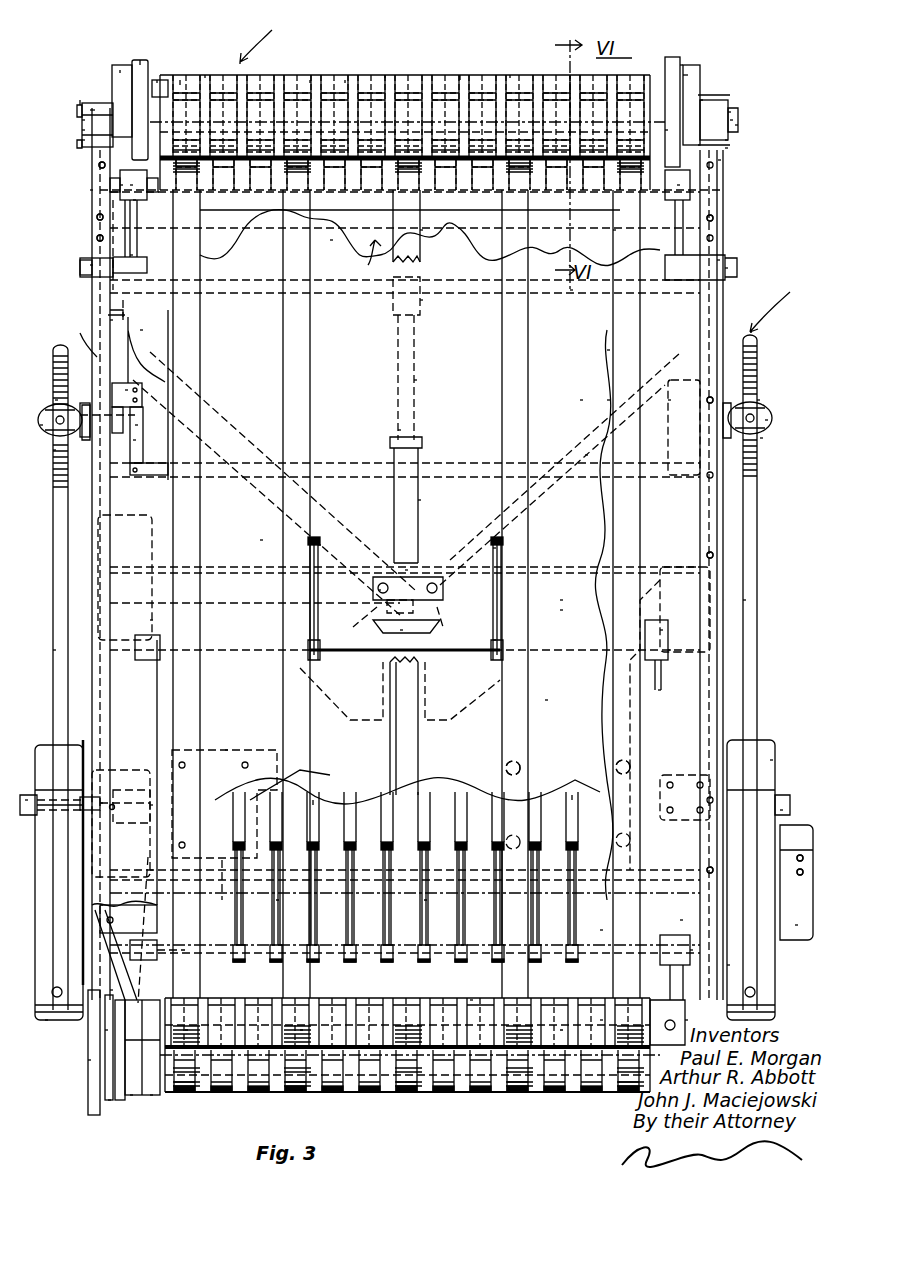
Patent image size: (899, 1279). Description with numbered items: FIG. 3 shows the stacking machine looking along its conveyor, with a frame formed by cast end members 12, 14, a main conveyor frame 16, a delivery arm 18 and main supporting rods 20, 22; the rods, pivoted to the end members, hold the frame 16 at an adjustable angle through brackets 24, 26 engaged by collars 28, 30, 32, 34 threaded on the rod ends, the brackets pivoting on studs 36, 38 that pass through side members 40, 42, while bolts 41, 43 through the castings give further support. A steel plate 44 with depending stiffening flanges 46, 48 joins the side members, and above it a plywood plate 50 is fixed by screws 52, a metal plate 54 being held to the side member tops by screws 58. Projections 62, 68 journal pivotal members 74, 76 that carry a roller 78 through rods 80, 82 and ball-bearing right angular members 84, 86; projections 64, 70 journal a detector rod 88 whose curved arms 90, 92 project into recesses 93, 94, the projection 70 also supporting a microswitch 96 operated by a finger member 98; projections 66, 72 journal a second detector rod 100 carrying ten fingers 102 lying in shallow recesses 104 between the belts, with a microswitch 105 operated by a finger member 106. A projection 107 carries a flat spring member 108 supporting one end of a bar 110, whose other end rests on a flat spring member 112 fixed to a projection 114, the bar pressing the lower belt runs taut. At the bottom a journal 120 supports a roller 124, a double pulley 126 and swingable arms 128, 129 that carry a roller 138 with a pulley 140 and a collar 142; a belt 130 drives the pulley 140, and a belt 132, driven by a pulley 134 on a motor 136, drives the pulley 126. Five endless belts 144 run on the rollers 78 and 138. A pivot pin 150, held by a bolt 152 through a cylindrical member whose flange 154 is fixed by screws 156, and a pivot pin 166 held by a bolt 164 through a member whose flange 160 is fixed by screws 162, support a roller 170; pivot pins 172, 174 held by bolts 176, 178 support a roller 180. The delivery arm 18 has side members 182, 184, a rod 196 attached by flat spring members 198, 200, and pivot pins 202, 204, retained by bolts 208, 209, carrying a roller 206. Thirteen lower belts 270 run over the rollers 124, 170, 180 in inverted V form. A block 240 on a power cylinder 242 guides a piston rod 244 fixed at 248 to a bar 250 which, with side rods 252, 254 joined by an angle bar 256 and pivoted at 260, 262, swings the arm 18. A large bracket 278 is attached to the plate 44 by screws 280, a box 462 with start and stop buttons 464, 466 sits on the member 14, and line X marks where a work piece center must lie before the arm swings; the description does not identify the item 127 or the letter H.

The cast end member 12 is at (55, 1030).
The cast end member 14 is at (750, 760).
The main conveyor frame 16 is at (771, 294).
The delivery arm 18 is at (261, 37).
The main supporting rod 20 is at (53, 650).
The main supporting rod 22 is at (745, 600).
The bracket 24 is at (40, 428).
The bracket 26 is at (768, 418).
The collar 28 is at (56, 400).
The collar 30 is at (53, 455).
The collar 32 is at (758, 400).
The collar 34 is at (762, 438).
The stud 36 is at (133, 442).
The stud 38 is at (608, 400).
The side member 40 is at (110, 320).
The bolt 41 is at (25, 798).
The side member 42 is at (720, 260).
The bolt 43 is at (782, 812).
The steel plate 44 is at (560, 600).
The stiffening flange 46 is at (218, 870).
The stiffening flange 48 is at (240, 615).
The plywood plate 50 is at (143, 330).
The screws 52 is at (98, 238).
The metal plate 54 is at (90, 190).
The screws 58 is at (98, 165).
The projection 62 is at (90, 265).
The projection 64 is at (152, 620).
The projection 66 is at (152, 875).
The projection 68 is at (727, 268).
The projection 70 is at (663, 630).
The projection 72 is at (725, 910).
The pivotal member 74 is at (135, 256).
The pivotal member 76 is at (607, 350).
The roller 78 is at (423, 230).
The rod 80 is at (133, 200).
The rod 82 is at (614, 232).
The right angular member 84 is at (133, 187).
The right angular member 86 is at (677, 185).
The detector rod 88 is at (560, 612).
The curved arm 90 is at (378, 592).
The curved arm 92 is at (495, 640).
The recess 93 is at (320, 545).
The recess 94 is at (493, 548).
The microswitch 96 is at (660, 690).
The finger member 98 is at (670, 650).
The second detector rod 100 is at (580, 950).
The fingers 102 is at (308, 862).
The shallow recess 104 is at (360, 800).
The microswitch 105 is at (715, 975).
The finger member 106 is at (692, 950).
The projection 107 is at (128, 390).
The flat spring member 108 is at (137, 425).
The bar 110 is at (398, 430).
The flat spring member 112 is at (610, 410).
The projection 114 is at (668, 400).
The journal 120 is at (133, 1097).
The roller 124 is at (412, 1095).
The double pulley 126 is at (88, 1100).
The shaft 127 is at (510, 75).
The swingable arm 128 is at (152, 1097).
The swingable arm 129 is at (625, 1035).
The belt 130 is at (108, 1105).
The belt 132 is at (105, 1030).
The pulley 134 is at (112, 790).
The motor 136 is at (225, 752).
The roller 138 is at (450, 1000).
The pulley 140 is at (110, 990).
The collar 142 is at (685, 1020).
The endless belts 144 is at (220, 985).
The pivot pin 150 is at (157, 80).
The bolt 152 is at (83, 120).
The flange 154 is at (80, 100).
The screws 156 is at (83, 130).
The flange 160 is at (730, 112).
The screws 162 is at (733, 120).
The bolt 164 is at (738, 125).
The pivot pin 166 is at (666, 130).
The roller 170 is at (460, 78).
The pivot pin 172 is at (460, 75).
The pivot pin 174 is at (728, 140).
The bolt 176 is at (83, 140).
The bolt 178 is at (727, 148).
The roller 180 is at (385, 75).
The side member 182 is at (120, 70).
The side member 184 is at (682, 63).
The rod 196 is at (310, 80).
The flat spring member 198 is at (140, 57).
The flat spring member 200 is at (686, 75).
The pivot pin 202 is at (180, 80).
The pivot pin 204 is at (570, 290).
The roller 206 is at (345, 80).
The bolt 208 is at (121, 185).
The bolt 209 is at (720, 160).
The block 240 is at (405, 570).
The power cylinder 242 is at (420, 500).
The piston rod 244 is at (417, 380).
The attachment point 248 is at (423, 300).
The bar 250 is at (332, 242).
The side rod 252 is at (262, 540).
The side rod 254 is at (590, 460).
The angle bar 256 is at (402, 632).
The pivot 260 is at (92, 108).
The pivot 262 is at (702, 100).
The endless belts 270 is at (362, 1095).
The large bracket 278 is at (547, 700).
The screws 280 is at (620, 835).
The box 462 is at (797, 928).
The start button 464 is at (797, 860).
The stop button 466 is at (797, 875).
The spring H is at (222, 712).
The line X is at (356, 251).